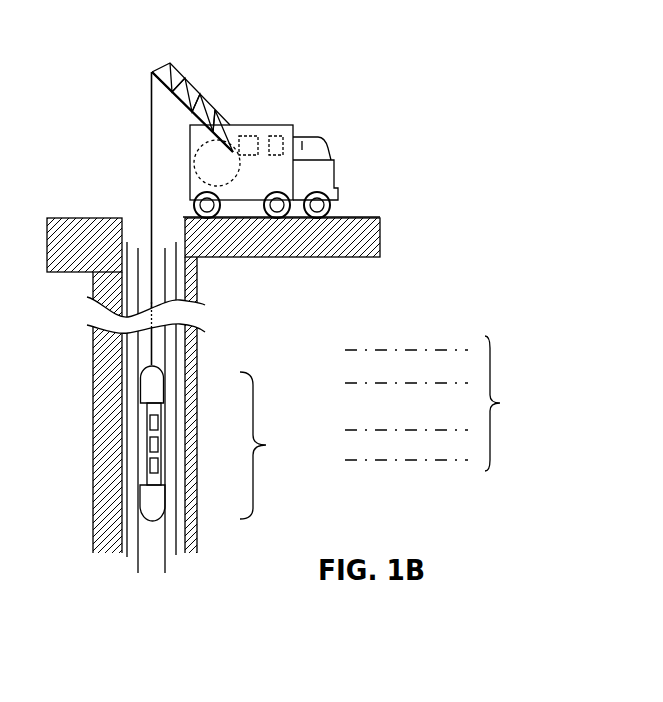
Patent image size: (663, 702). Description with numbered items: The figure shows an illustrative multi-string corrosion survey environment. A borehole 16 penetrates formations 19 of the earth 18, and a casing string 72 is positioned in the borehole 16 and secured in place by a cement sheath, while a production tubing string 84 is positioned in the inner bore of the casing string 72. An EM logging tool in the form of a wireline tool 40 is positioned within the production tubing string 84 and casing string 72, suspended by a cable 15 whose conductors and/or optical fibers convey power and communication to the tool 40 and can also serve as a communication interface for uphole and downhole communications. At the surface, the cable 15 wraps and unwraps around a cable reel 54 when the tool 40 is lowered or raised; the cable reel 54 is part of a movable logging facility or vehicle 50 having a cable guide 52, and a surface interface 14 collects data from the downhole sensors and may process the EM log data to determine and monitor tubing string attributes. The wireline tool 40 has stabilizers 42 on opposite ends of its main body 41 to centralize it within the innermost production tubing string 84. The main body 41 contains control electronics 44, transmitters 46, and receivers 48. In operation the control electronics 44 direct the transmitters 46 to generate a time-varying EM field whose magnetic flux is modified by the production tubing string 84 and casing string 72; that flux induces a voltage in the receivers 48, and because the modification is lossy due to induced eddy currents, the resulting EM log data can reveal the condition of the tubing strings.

The surface interface 14 is at (245, 137).
The cable 15 is at (150, 172).
The borehole 16 is at (130, 218).
The earth 18 is at (105, 253).
The formations 19 is at (443, 403).
The wireline tool 40 is at (180, 438).
The main body 41 is at (147, 448).
The stabilizers 42 is at (147, 385).
The control electronics 44 is at (158, 422).
The transmitters 46 is at (158, 445).
The receivers 48 is at (158, 468).
The movable logging facility or vehicle 50 is at (333, 173).
The cable guide 52 is at (182, 72).
The cable reel 54 is at (200, 172).
The casing string 72 is at (125, 557).
The production tubing string 84 is at (137, 565).